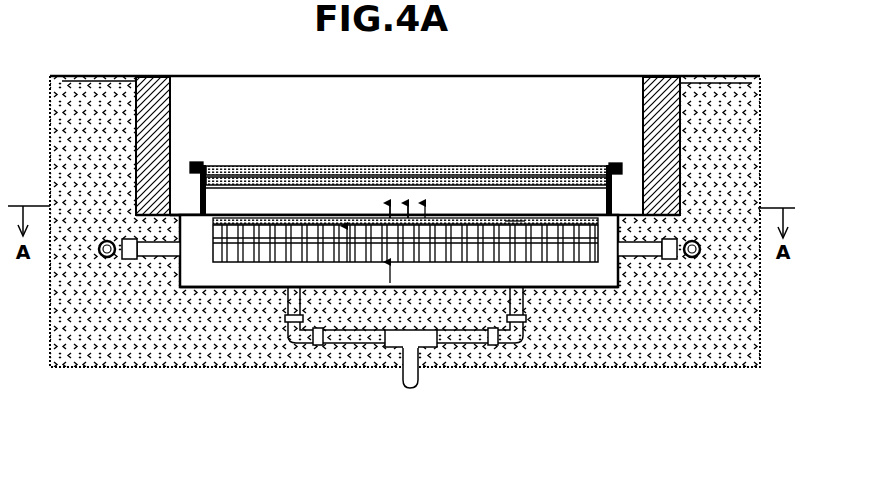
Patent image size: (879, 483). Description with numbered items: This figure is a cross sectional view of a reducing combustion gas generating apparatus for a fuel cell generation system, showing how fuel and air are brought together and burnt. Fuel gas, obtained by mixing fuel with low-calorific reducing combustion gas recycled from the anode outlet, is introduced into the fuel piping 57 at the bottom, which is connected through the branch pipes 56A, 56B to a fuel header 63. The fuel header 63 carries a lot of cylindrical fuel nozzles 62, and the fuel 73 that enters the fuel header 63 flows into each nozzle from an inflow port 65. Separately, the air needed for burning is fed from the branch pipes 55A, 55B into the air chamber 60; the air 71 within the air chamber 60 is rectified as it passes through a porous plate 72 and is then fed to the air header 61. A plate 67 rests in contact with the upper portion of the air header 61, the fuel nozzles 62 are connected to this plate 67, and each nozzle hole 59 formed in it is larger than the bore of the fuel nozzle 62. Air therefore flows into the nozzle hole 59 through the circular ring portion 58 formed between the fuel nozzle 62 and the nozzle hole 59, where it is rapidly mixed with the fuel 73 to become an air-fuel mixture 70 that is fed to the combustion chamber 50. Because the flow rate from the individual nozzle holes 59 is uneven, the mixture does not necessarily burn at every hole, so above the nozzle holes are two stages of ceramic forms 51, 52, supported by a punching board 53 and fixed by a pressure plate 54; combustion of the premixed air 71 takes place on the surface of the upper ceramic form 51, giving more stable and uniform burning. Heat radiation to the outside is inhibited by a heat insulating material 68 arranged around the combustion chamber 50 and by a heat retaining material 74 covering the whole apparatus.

The combustion chamber 50 is at (509, 120).
The upper stage ceramic form 51 is at (370, 166).
The lower stage ceramic form 52 is at (410, 166).
The punching board 53 is at (262, 189).
The pressure plate 54 is at (203, 162).
The branch pipe 55A is at (150, 250).
The branch pipe 55B is at (675, 262).
The branch pipe 56A is at (286, 297).
The branch pipe 56B is at (528, 312).
The fuel piping 57 is at (413, 389).
The circular ring portion 58 is at (283, 216).
The nozzle hole 59 is at (478, 216).
The air chamber 60 is at (605, 250).
The air header 61 is at (670, 193).
The fuel nozzle 62 is at (517, 219).
The fuel header 63 is at (228, 277).
The inflow port 65 is at (460, 262).
The plate 67 is at (195, 213).
The heat insulating material 68 is at (172, 100).
The air-fuel mixture 70 is at (428, 210).
The air 71 is at (345, 243).
The porous plate 72 is at (200, 243).
The fuel 73 is at (386, 275).
The heat retaining material 74 is at (745, 133).